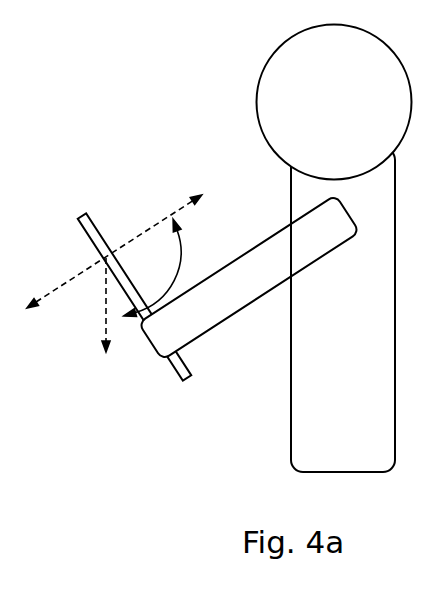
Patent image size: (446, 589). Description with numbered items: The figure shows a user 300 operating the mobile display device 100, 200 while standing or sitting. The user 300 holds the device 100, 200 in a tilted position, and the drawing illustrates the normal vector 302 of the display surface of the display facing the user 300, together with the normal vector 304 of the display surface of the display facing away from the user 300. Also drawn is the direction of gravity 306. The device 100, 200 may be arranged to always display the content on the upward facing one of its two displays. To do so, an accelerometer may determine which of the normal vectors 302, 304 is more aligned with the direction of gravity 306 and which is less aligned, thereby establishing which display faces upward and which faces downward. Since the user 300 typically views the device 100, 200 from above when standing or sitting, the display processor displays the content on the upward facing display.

The user 300 is at (237, 88).
The device 100 is at (135, 262).
The device 200 is at (97, 212).
The normal vector 302 is at (187, 218).
The normal vector 304 is at (52, 300).
The direction of gravity 306 is at (120, 355).